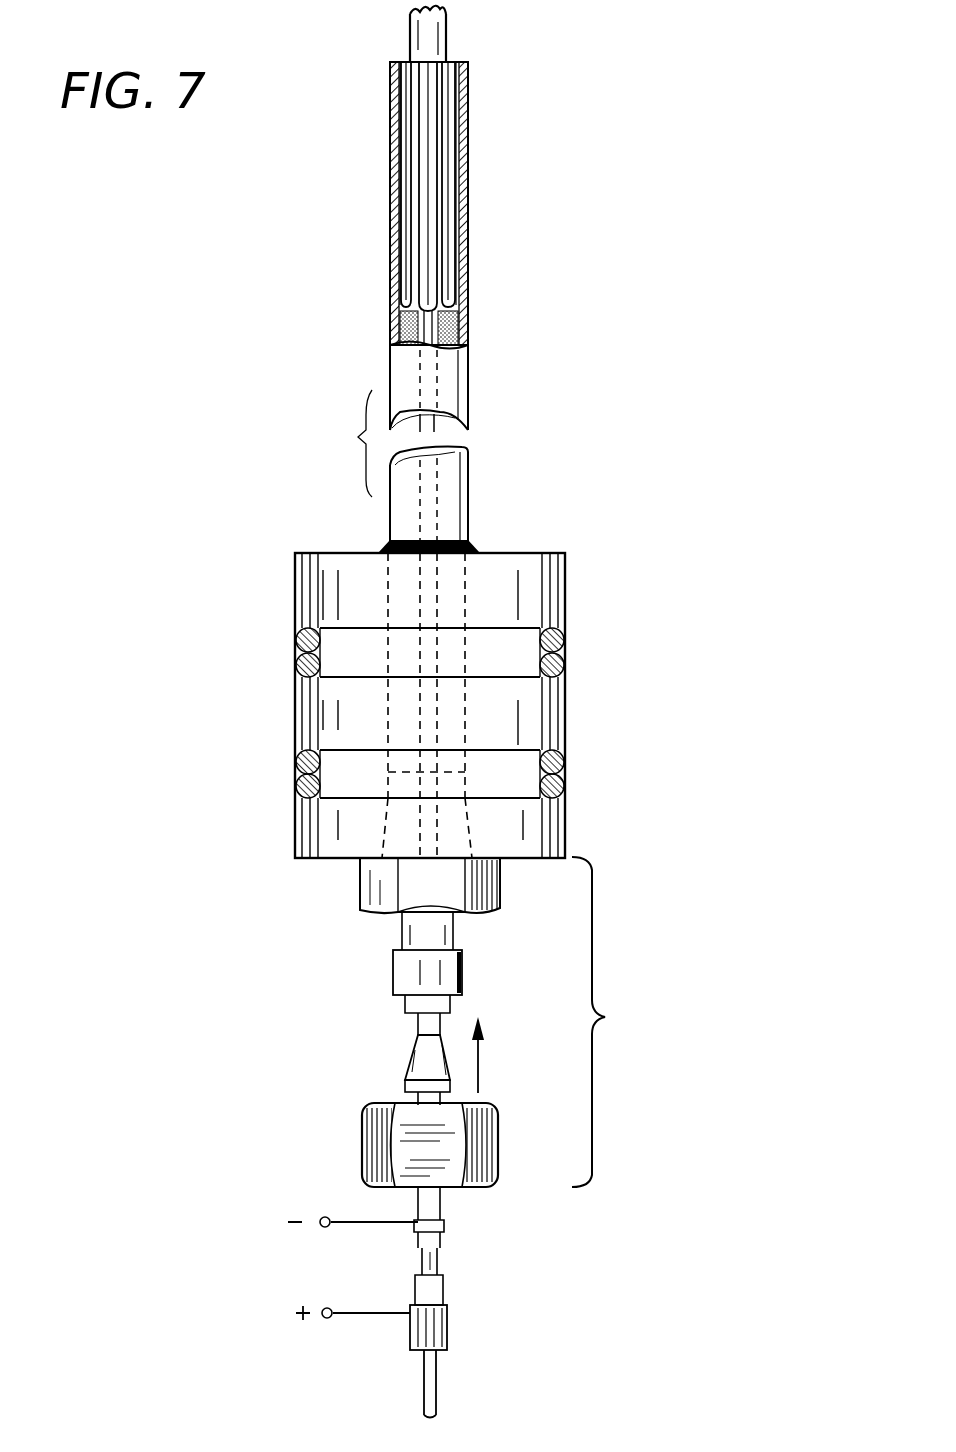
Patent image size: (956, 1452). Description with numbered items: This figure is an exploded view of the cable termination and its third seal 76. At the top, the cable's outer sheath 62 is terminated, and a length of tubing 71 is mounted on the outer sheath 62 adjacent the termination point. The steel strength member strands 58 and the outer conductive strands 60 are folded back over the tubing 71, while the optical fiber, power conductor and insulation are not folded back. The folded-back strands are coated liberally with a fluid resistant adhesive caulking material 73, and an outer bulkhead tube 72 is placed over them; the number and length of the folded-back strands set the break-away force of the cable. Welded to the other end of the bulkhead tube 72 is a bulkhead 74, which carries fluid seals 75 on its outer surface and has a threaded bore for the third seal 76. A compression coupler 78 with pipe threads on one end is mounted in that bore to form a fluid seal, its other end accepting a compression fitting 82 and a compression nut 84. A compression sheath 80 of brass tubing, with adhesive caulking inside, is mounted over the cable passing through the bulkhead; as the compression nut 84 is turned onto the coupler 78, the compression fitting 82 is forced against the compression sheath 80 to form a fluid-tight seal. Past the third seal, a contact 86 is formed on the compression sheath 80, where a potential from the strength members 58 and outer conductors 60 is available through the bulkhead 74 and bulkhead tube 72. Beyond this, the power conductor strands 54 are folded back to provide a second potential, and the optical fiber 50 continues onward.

The optical fiber 50 is at (436, 1385).
The power conductor strands 54 is at (447, 1330).
The strength member strands 58 is at (392, 256).
The outer conductive strands 60 is at (420, 128).
The outer sheath 62 is at (448, 48).
The tubing 71 is at (420, 212).
The bulkhead tube 72 is at (468, 375).
The adhesive caulking material 73 is at (468, 325).
The bulkhead 74 is at (565, 606).
The fluid seals 75 is at (295, 640).
The third seal 76 is at (609, 1022).
The compression coupler 78 is at (360, 888).
The compression sheath 80 is at (418, 1025).
The compression fitting 82 is at (412, 1050).
The compression nut 84 is at (362, 1145).
The contact 86 is at (440, 1222).